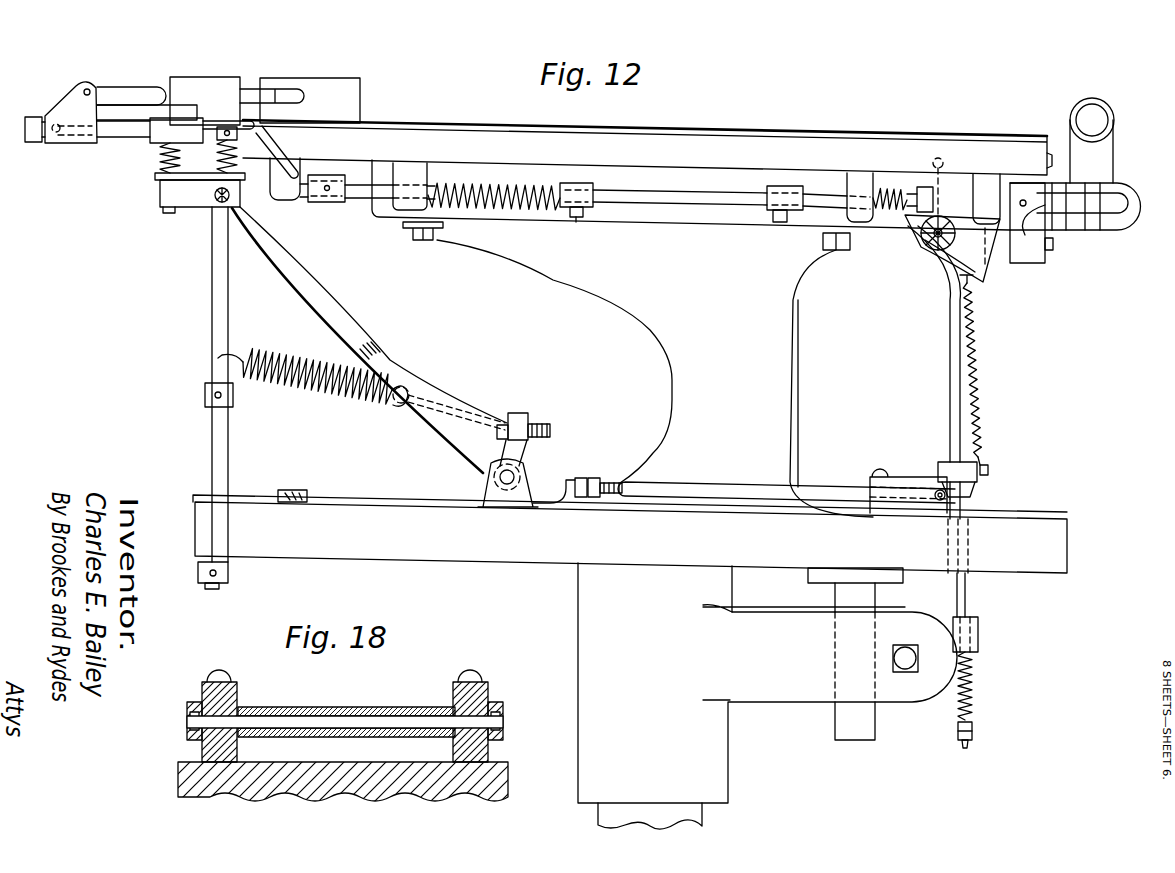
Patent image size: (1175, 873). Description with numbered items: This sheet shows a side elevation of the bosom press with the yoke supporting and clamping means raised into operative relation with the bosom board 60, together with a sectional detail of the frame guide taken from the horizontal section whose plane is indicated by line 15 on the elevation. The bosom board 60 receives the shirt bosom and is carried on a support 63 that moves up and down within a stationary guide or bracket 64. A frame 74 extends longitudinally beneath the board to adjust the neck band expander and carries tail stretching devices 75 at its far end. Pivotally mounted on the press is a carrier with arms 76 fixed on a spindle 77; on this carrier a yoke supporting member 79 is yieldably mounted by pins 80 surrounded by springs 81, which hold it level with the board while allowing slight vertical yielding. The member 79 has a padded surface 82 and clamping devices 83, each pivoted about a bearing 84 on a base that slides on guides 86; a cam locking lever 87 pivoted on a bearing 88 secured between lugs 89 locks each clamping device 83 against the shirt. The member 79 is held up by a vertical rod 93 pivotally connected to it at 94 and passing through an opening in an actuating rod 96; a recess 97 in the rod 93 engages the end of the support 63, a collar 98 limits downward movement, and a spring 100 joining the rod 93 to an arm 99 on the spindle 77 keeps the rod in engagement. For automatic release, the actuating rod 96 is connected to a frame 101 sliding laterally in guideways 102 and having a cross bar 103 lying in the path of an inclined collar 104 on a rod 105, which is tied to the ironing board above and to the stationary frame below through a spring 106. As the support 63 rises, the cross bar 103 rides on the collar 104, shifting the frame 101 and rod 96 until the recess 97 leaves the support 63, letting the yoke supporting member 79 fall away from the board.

In FIG. 12, the section line 15— 15 is at (1040, 394).
In FIG. 12, the bosom board 60 is at (647, 147).
In FIG. 12, the support 63 is at (503, 550).
In FIG. 12, the stationary guide or bracket 64 is at (767, 696).
In FIG. 12, the frame 74 is at (328, 202).
In FIG. 12, the tail stretching devices 75 is at (1075, 182).
In FIG. 12, the arms 76 is at (348, 320).
In FIG. 12, the spindle 77 is at (522, 474).
In FIG. 12, the yoke supporting member 79 is at (238, 122).
In FIG. 12, the pins 80 is at (160, 160).
In FIG. 12, the springs 81 is at (239, 160).
In FIG. 12, the padded surface 82 is at (250, 131).
In FIG. 12, the clamping devices 83 is at (113, 107).
In FIG. 12, the bearing 84 is at (52, 126).
In FIG. 12, the guides 86 is at (122, 138).
In FIG. 12, the cam locking lever 87 is at (147, 88).
In FIG. 12, the bearing 88 is at (88, 89).
In FIG. 12, the lugs 89 is at (62, 98).
In FIG. 12, the vertical rod or bar 93 is at (214, 326).
In FIG. 12, the pivotal connection 94 is at (208, 210).
In FIG. 12, the actuating rod 96 is at (363, 503).
In FIG. 12, the recess 97 is at (222, 528).
In FIG. 12, the collar 98 is at (205, 396).
In FIG. 12, the arm 99 is at (530, 426).
In FIG. 12, the spring 100 is at (346, 393).
In FIG. 12, the frame 101 is at (712, 488).
In FIG. 12, the guideways 102 is at (907, 513).
In FIG. 18, the guideways 102 is at (228, 695).
In FIG. 12, the cross bar 103 is at (946, 497).
In FIG. 18, the cross bar 103 is at (370, 727).
In FIG. 12, the inclined collar 104 is at (976, 488).
In FIG. 12, the rod 105 is at (968, 598).
In FIG. 12, the spring 106 is at (975, 681).